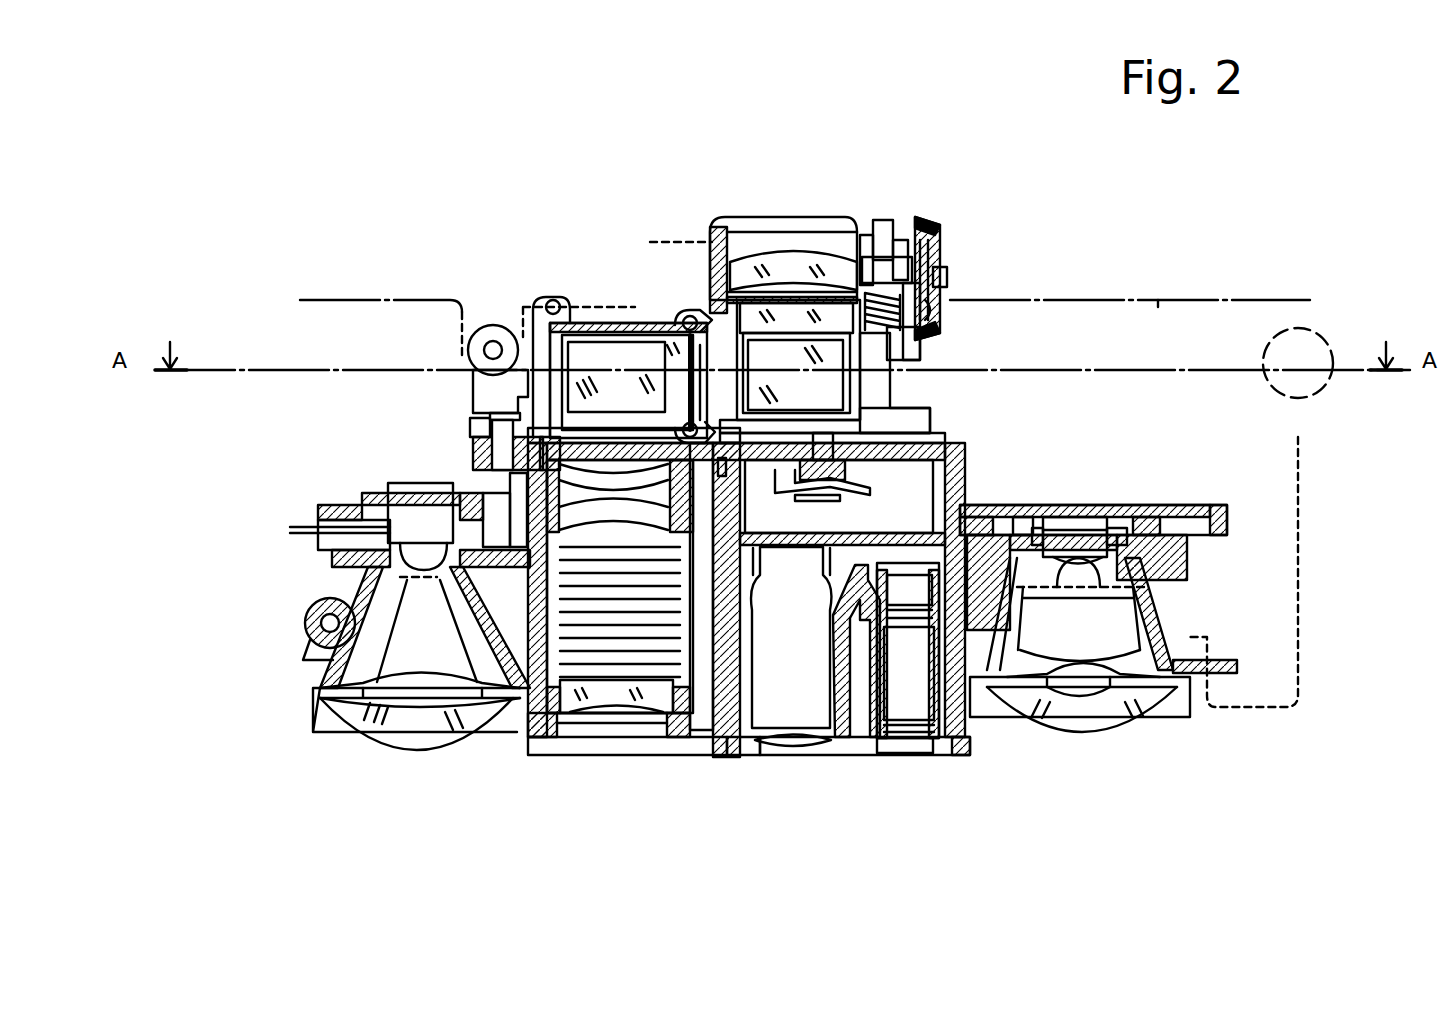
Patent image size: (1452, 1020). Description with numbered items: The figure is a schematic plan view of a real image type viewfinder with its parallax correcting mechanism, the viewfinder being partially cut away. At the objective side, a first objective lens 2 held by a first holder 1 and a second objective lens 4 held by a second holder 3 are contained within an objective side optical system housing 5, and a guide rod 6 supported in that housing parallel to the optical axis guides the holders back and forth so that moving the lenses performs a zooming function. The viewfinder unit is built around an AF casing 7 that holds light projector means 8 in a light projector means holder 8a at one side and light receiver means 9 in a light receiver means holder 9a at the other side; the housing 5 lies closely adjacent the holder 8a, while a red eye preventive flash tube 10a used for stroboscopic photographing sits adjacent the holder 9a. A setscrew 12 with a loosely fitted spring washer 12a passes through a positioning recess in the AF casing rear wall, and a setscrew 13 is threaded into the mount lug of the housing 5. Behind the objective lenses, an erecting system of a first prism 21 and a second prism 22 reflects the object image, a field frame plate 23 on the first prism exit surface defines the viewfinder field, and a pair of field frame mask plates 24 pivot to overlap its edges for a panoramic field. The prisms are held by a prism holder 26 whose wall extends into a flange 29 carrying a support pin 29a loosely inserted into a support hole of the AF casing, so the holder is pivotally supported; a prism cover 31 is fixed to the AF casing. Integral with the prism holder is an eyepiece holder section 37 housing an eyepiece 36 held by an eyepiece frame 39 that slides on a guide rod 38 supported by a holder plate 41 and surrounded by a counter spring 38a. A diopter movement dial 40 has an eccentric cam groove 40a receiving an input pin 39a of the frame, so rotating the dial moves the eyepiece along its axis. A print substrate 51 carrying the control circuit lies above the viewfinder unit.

The first holder 1 is at (683, 722).
The first objective lens 2 is at (615, 715).
The second holder 3 is at (530, 500).
The second objective lens 4 is at (473, 437).
The objective side optical system housing 5 is at (590, 722).
The guide rod 6 is at (710, 715).
The AF casing 7 is at (985, 720).
The light projector means 8 is at (400, 520).
The light projector means holder 8a is at (330, 665).
The light receiver means 9 is at (1083, 543).
The light receiver means holder 9a is at (1175, 625).
The red eye preventive flash tube 10a is at (797, 738).
The setscrew 12 is at (825, 497).
The spring washer 12a is at (877, 490).
The setscrew 13 is at (502, 447).
The first prism 21 is at (607, 357).
The second prism 22 is at (835, 385).
The field frame plate 23 is at (647, 343).
The field frame mask plates 24 is at (668, 325).
The prism holder 26 is at (478, 400).
The flange 29 is at (920, 410).
The support pin 29a is at (930, 440).
The prism cover 31 is at (548, 300).
The eyepiece 36 is at (817, 265).
The eyepiece holder section 37 is at (733, 222).
The guide rod 38 is at (880, 228).
The counter spring 38a is at (925, 350).
The eyepiece frame 39 is at (920, 300).
The input pin 39a is at (943, 270).
The diopter movement dial 40 is at (940, 235).
The cam groove 40a is at (945, 320).
The holder plate 41 is at (900, 255).
The print substrate 51 is at (1158, 300).